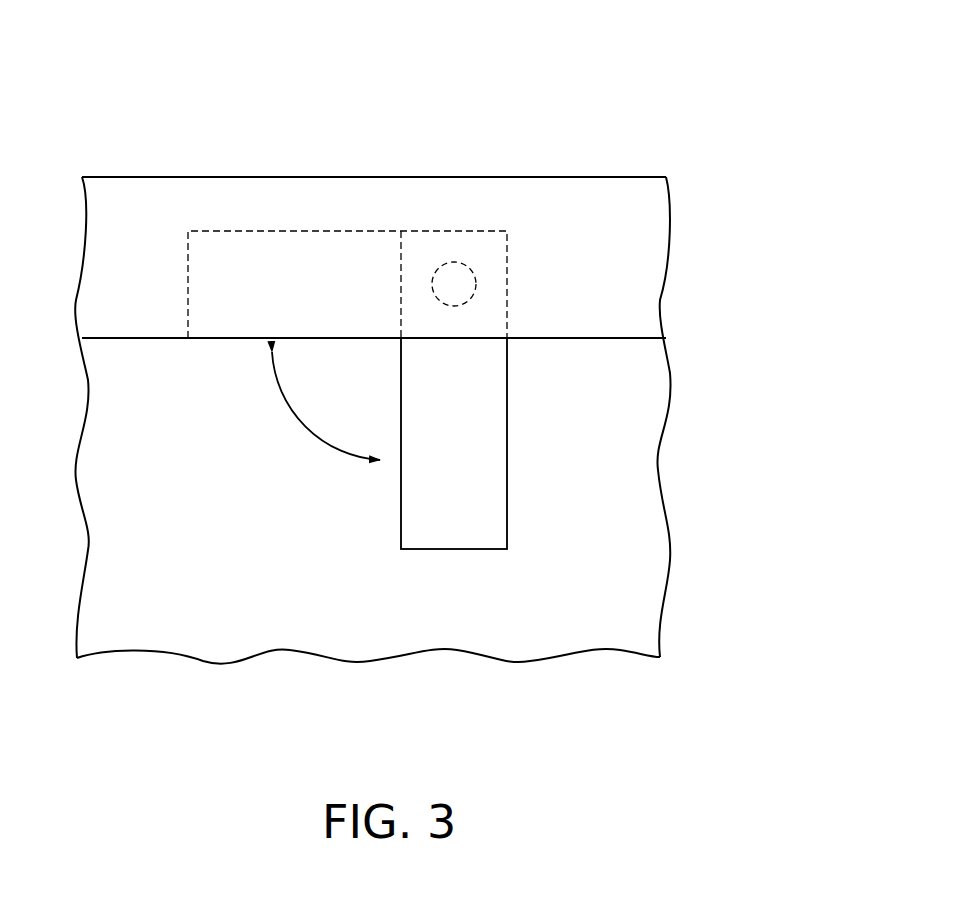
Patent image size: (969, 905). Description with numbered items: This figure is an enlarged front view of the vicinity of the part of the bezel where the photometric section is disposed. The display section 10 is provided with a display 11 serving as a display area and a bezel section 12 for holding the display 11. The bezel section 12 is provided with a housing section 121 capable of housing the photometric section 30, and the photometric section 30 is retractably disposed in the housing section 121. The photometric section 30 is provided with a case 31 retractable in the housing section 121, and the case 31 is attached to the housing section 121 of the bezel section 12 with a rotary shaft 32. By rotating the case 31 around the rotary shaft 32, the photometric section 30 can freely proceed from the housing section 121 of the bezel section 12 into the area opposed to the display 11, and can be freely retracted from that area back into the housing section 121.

The display section 10 is at (613, 135).
The display 11 is at (640, 368).
The bezel section 12 is at (640, 284).
The housing section 121 is at (283, 231).
The photometric section 30 is at (532, 442).
The case 31 is at (475, 522).
The rotary shaft 32 is at (454, 262).